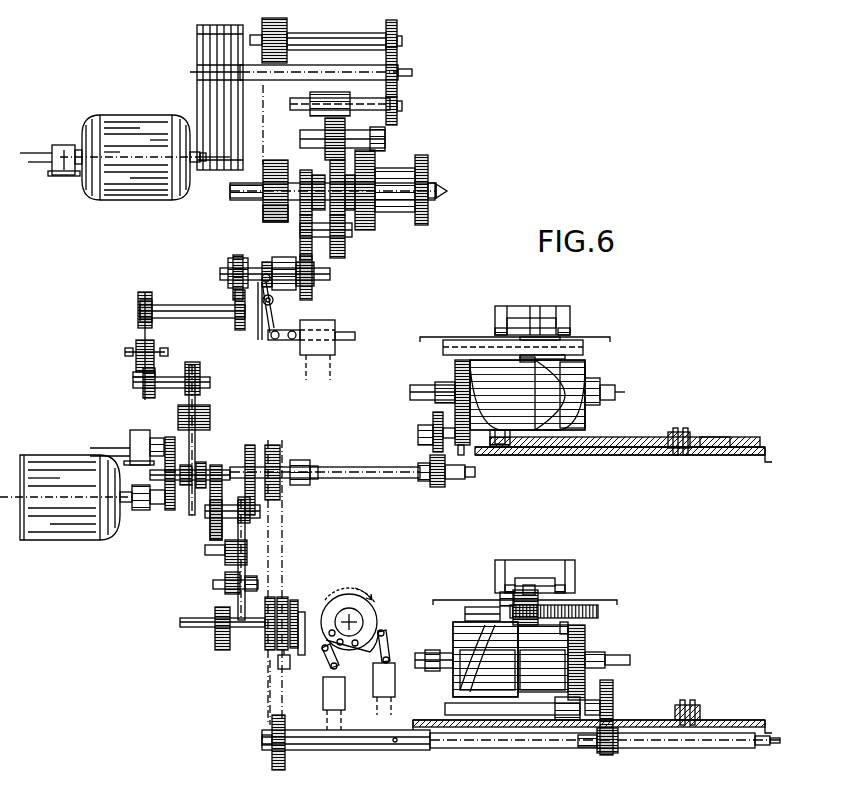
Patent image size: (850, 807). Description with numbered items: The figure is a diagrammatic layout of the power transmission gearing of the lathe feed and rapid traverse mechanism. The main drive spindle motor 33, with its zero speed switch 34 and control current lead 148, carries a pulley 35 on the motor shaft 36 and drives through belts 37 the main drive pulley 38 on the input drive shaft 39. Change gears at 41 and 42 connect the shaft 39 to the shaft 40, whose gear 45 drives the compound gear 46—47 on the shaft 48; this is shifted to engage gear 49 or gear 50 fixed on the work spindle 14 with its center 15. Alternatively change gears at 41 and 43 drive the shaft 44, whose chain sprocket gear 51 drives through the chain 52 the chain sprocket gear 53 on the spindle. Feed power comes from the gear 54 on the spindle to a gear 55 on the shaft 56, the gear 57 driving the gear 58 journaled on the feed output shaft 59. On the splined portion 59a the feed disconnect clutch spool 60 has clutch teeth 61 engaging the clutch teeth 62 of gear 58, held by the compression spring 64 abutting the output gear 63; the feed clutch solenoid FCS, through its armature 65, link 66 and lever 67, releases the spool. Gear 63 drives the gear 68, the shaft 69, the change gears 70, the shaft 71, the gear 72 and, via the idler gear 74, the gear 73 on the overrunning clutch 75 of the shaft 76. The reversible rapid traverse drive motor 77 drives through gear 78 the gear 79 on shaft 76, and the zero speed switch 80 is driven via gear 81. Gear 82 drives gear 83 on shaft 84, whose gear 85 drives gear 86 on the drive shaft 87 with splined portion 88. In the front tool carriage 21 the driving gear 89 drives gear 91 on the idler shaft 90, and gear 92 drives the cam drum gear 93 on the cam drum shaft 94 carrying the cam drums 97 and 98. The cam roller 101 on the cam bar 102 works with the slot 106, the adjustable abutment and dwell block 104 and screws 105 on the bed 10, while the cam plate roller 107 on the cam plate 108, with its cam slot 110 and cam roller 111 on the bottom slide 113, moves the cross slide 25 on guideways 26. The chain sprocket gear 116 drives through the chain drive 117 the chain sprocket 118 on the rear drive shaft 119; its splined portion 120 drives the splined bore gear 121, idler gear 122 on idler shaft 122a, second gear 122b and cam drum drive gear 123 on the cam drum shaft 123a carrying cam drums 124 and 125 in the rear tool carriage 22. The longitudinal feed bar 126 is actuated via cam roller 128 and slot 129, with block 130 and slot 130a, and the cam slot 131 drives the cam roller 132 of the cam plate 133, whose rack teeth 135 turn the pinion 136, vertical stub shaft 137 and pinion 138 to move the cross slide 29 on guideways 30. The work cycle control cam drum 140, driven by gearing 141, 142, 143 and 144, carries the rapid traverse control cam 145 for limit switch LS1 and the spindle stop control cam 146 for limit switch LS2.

The bed 10 is at (766, 447).
The work spindle 14 is at (430, 176).
The center 15 is at (445, 191).
The front tool carriage 21 is at (446, 337).
The rear tool carriage 22 is at (618, 599).
The cross slide 25 is at (531, 305).
The guideways 26 is at (501, 325).
The cross slide 29 is at (576, 569).
The guideways 30 is at (510, 585).
The main drive spindle motor 33 is at (130, 157).
The zero speed switch 34 is at (62, 145).
The pulley 35 is at (203, 165).
The motor shaft 36 is at (195, 150).
The belts 37 is at (224, 76).
The main drive pulley 38 is at (197, 40).
The input drive shaft 39 is at (326, 72).
The shaft 40 is at (344, 104).
The change gear position 41 is at (398, 63).
The change gear position 42 is at (398, 114).
The change gear position 43 is at (398, 25).
The shaft 44 is at (336, 42).
The gear 45 is at (308, 96).
The larger gear of compound gear 46 is at (302, 125).
The gear of compound gear 47 is at (346, 123).
The shaft 48 is at (386, 138).
The gear 49 is at (330, 158).
The gear 50 is at (376, 223).
The chain sprocket gear 51 is at (288, 25).
The chain 52 is at (264, 150).
The chain sprocket gear 53 is at (266, 218).
The gear 54 is at (337, 172).
The gear 55 is at (340, 254).
The shaft 56 is at (353, 237).
The gear 57 is at (300, 222).
The gear 58 is at (313, 294).
The feed output shaft 59 is at (331, 273).
The splined portion 59a is at (258, 265).
The feed disconnect clutch spool 60 is at (268, 262).
The clutch teeth 61 is at (284, 290).
The clutch teeth 62 is at (314, 258).
The output gear 63 is at (233, 265).
The compression spring 64 is at (258, 340).
The armature 65 is at (346, 340).
The link 66 is at (288, 340).
The lever 67 is at (266, 350).
The gear 68 is at (236, 330).
The shaft 69 is at (190, 308).
The change gears 70 is at (142, 330).
The shaft 71 is at (180, 385).
The gear 72 is at (192, 371).
The gear 73 is at (192, 500).
The idler gear 74 is at (210, 416).
The overrunning clutch 75 is at (200, 462).
The shaft 76 is at (210, 465).
The rapid traverse drive motor 77 is at (67, 497).
The gear 78 is at (165, 500).
The gear 79 is at (165, 482).
The zero speed switch 80 is at (130, 440).
The gear 81 is at (167, 438).
The gear 82 is at (216, 470).
The gear 83 is at (215, 534).
The shaft 84 is at (261, 511).
The gear 85 is at (250, 521).
The gear 86 is at (252, 446).
The drive shaft 87 is at (306, 478).
The splined portion 88 is at (360, 467).
The driving gear 89 is at (430, 476).
The idler shaft 90 is at (418, 438).
The gear 91 is at (433, 421).
The gear 92 is at (460, 456).
The cam drum gear 93 is at (455, 366).
The cam drum shaft 94 is at (616, 392).
The cam drum 97 is at (497, 402).
The cam drum 98 is at (557, 395).
The cam roller 101 is at (502, 445).
The cam bar 102 is at (598, 437).
The adjustable abutment and dwell block 104 is at (690, 432).
The screws 105 is at (685, 428).
The slot 106 is at (712, 447).
The cam plate roller 107 is at (526, 386).
The cam plate 108 is at (583, 343).
The cam slot 110 is at (486, 345).
The cam roller 111 is at (566, 357).
The bottom slide 113 is at (552, 320).
The chain sprocket gear 116 is at (275, 445).
The chain drive 117 is at (270, 689).
The chain sprocket 118 is at (278, 770).
The rear drive shaft 119 is at (330, 750).
The splined portion 120 is at (508, 746).
The splined bore gear 121 is at (612, 753).
The idler gear 122 is at (613, 685).
The idler shaft 122a is at (616, 704).
The second gear 122b is at (582, 742).
The cam drum drive gear 123 is at (586, 641).
The cam drum shaft 123a is at (440, 655).
The cam drum 124 is at (542, 670).
The cam drum 125 is at (487, 670).
The longitudinal feed bar 126 is at (490, 710).
The cam roller 128 is at (560, 706).
The slot 129 is at (568, 628).
The block 130 is at (700, 702).
The slot 130a is at (670, 705).
The cam slot 131 is at (485, 659).
The cam roller 132 is at (498, 625).
The cam plate 133 is at (480, 608).
The rack teeth 135 is at (590, 605).
The pinion 136 is at (543, 658).
The vertical stub shaft 137 is at (500, 595).
The pinion 138 is at (530, 585).
The work cycle control cam drum 140 is at (290, 598).
The gearing 141 is at (247, 563).
The gearing 142 is at (225, 552).
The gearing 143 is at (213, 585).
The gearing 144 is at (222, 650).
The rapid traverse control cam 145 is at (360, 596).
The spindle stop control cam 146 is at (278, 658).
The control current lead 148 is at (44, 146).
The feed clutch solenoid FCS is at (335, 326).
The limit switch LS1 is at (395, 688).
The limit switch LS2 is at (323, 702).